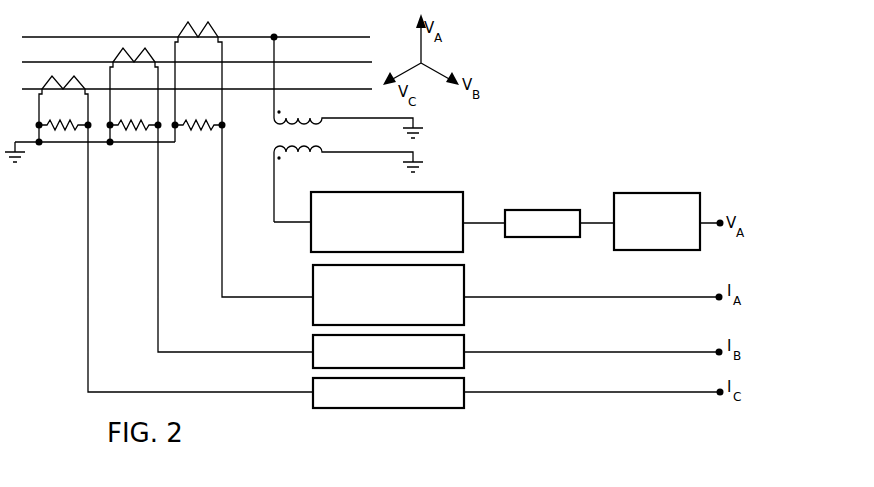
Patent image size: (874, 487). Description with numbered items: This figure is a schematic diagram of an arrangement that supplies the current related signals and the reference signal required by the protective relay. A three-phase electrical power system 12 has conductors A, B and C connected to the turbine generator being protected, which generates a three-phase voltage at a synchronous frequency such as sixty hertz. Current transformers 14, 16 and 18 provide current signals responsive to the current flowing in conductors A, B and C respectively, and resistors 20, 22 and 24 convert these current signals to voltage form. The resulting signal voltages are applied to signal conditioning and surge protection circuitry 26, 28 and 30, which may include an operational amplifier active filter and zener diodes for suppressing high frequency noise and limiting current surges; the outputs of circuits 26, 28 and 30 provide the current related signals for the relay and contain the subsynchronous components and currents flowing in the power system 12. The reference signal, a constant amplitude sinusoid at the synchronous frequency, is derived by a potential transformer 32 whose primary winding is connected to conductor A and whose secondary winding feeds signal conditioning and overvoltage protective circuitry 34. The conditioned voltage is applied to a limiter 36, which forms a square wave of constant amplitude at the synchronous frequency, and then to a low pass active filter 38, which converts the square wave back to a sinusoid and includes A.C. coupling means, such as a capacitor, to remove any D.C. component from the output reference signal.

The three-phase electrical power system 12 is at (134, 31).
The current transformer 14 is at (227, 19).
The current transformer 16 is at (118, 55).
The current transformer 18 is at (49, 80).
The resistor 20 is at (200, 128).
The resistor 22 is at (138, 118).
The resistor 24 is at (72, 118).
The signal conditioning and surge protection circuitry 26 is at (464, 280).
The signal conditioning and surge protection circuitry 28 is at (464, 344).
The signal conditioning and surge protection circuitry 30 is at (464, 386).
The potential transformer 32 is at (277, 138).
The signal conditioning and overvoltage protective circuitry 34 is at (441, 170).
The limiter 36 is at (548, 210).
The low pass active filter 38 is at (660, 171).